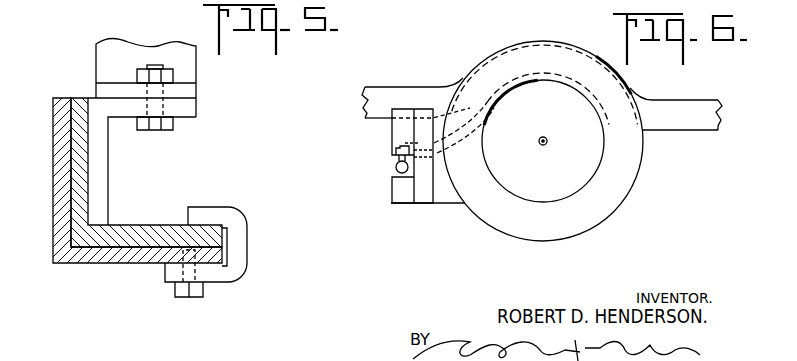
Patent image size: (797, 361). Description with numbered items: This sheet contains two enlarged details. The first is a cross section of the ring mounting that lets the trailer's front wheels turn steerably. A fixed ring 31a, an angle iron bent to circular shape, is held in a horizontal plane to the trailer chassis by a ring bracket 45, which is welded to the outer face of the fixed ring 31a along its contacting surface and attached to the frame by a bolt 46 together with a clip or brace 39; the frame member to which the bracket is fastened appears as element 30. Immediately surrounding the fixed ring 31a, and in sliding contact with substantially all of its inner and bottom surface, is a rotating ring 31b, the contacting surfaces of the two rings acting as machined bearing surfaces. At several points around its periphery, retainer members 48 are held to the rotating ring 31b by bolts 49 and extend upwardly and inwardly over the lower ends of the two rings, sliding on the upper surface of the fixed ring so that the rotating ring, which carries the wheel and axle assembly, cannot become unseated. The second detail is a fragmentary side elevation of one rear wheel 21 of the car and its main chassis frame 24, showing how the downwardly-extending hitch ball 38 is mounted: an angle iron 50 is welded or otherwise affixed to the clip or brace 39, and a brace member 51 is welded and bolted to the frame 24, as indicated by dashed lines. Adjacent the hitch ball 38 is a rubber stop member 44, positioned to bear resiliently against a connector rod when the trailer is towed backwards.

In FIG. 6, the wheel 21 is at (613, 182).
In FIG. 6, the main chassis frame 24 is at (388, 100).
In FIG. 5, the support member 30 is at (115, 57).
In FIG. 5, the fixed ring 31a is at (108, 77).
In FIG. 5, the rotating ring 31b is at (54, 178).
In FIG. 6, the hitch ball 38 is at (396, 168).
In FIG. 6, the clip or brace 39 is at (400, 142).
In FIG. 6, the rubber stop member 44 is at (405, 192).
In FIG. 5, the ring bracket 45 is at (103, 165).
In FIG. 5, the bolt 46 is at (149, 67).
In FIG. 5, the retainer member 48 is at (236, 248).
In FIG. 5, the bolt 49 is at (189, 299).
In FIG. 6, the angle iron 50 is at (425, 190).
In FIG. 6, the brace member 51 is at (437, 150).